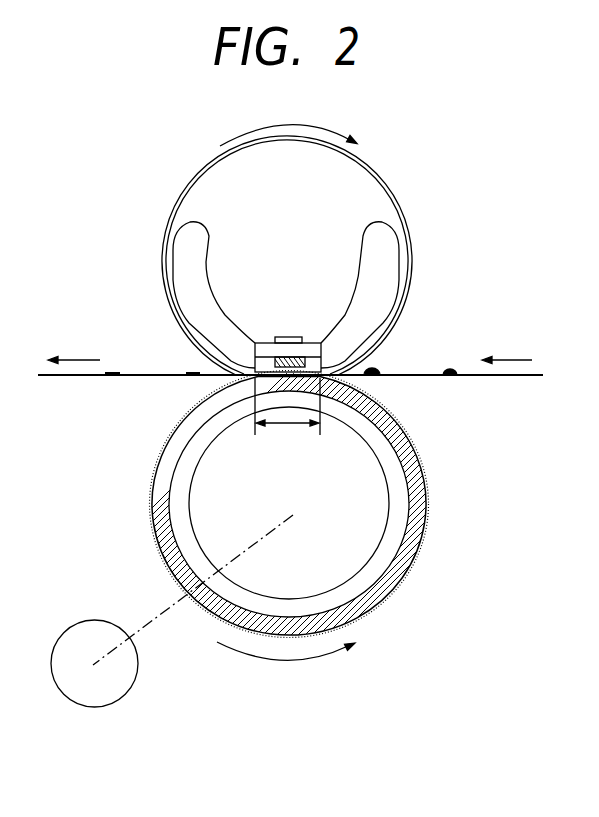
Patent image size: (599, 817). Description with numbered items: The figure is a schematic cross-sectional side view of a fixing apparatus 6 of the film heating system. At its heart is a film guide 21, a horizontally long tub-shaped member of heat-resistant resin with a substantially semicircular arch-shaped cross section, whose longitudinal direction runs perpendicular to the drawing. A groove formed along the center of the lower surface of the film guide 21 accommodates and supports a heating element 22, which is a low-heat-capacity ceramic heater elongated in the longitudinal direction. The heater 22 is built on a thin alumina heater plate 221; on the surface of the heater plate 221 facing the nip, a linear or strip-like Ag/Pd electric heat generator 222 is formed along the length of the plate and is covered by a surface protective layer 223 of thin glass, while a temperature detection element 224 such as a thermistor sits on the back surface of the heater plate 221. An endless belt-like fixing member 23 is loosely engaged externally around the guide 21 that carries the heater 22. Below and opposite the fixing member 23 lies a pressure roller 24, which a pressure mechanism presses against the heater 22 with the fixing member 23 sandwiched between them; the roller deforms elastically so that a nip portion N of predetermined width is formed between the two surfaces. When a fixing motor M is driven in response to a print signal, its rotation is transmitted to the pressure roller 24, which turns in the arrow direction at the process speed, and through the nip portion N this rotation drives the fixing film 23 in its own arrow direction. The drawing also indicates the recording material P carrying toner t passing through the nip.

The fixing apparatus 6 is at (457, 202).
The film guide 21 is at (382, 277).
The heating element 22 is at (276, 282).
The fixing member 23 is at (393, 198).
The pressure roller 24 is at (365, 528).
The heater plate 221 is at (310, 345).
The electric heat generator 222 is at (285, 362).
The surface protective layer 223 is at (268, 365).
The temperature detection element 224 is at (291, 337).
The toner image t is at (374, 369).
The recording sheet P is at (413, 374).
The nip portion N is at (287, 417).
The fixing motor M is at (94, 663).